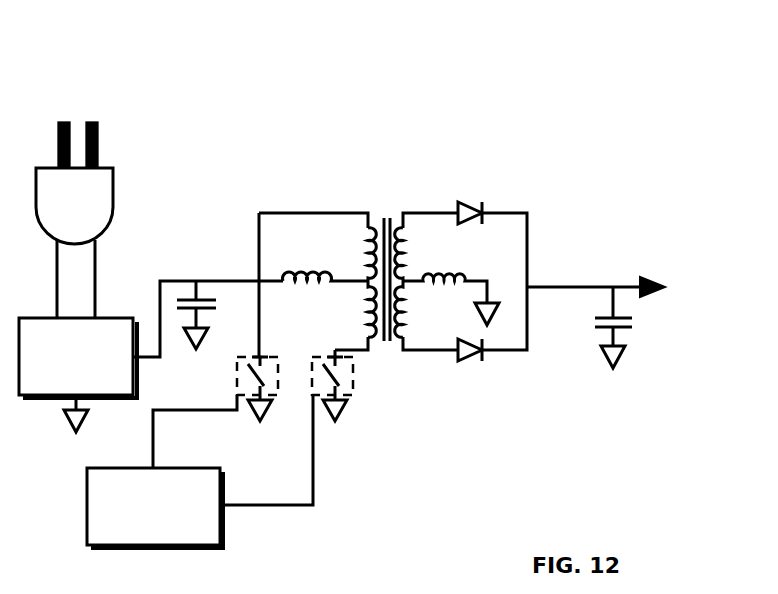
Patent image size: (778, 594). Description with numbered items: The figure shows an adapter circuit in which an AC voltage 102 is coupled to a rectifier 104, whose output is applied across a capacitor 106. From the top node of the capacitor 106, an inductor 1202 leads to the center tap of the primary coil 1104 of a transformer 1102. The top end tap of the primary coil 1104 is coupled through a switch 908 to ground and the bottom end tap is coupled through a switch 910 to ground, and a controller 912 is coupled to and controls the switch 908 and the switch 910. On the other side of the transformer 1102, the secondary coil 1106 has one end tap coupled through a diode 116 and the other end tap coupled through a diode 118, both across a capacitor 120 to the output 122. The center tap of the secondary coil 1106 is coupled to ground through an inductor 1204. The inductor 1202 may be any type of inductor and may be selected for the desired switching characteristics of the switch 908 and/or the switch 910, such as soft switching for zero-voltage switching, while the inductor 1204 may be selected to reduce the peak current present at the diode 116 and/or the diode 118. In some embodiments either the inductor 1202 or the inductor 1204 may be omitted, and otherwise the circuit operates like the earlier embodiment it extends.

The AC voltage 102 is at (112, 150).
The rectifier 104 is at (151, 356).
The capacitor 106 is at (187, 287).
The inductor 1202 is at (317, 250).
The transformer 1102 is at (388, 192).
The primary coil 1104 is at (353, 190).
The secondary coil 1106 is at (408, 192).
The diode 116 is at (498, 195).
The diode 118 is at (463, 368).
The inductor 1204 is at (442, 262).
The output 122 is at (612, 265).
The capacitor 120 is at (587, 335).
The switch 908 is at (288, 412).
The switch 910 is at (370, 393).
The controller 912 is at (155, 508).